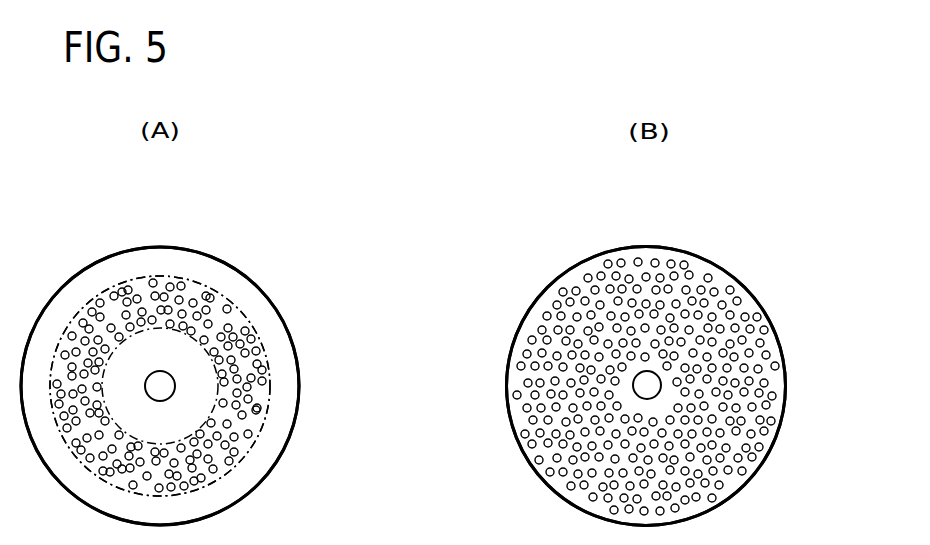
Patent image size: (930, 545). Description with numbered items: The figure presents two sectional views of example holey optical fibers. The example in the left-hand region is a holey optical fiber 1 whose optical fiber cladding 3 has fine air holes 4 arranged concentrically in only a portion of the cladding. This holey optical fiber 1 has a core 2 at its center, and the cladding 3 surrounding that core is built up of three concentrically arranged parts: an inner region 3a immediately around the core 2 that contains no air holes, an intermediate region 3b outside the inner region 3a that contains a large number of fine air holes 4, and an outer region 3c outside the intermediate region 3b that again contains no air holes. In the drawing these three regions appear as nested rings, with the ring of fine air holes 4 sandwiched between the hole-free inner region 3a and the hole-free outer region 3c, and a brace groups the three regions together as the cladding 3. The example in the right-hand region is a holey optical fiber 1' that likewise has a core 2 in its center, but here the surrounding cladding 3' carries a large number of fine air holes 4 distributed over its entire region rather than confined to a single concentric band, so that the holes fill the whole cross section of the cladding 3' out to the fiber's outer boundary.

The holey optical fiber 1 is at (160, 329).
The holey optical fiber 1' is at (646, 339).
The core 2 is at (167, 383).
The optical fiber cladding 3 is at (241, 386).
The inner region 3a is at (212, 368).
The intermediate region 3b is at (267, 392).
The outer region 3c is at (266, 440).
The cladding 3' is at (672, 386).
The fine air holes 4 is at (212, 472).